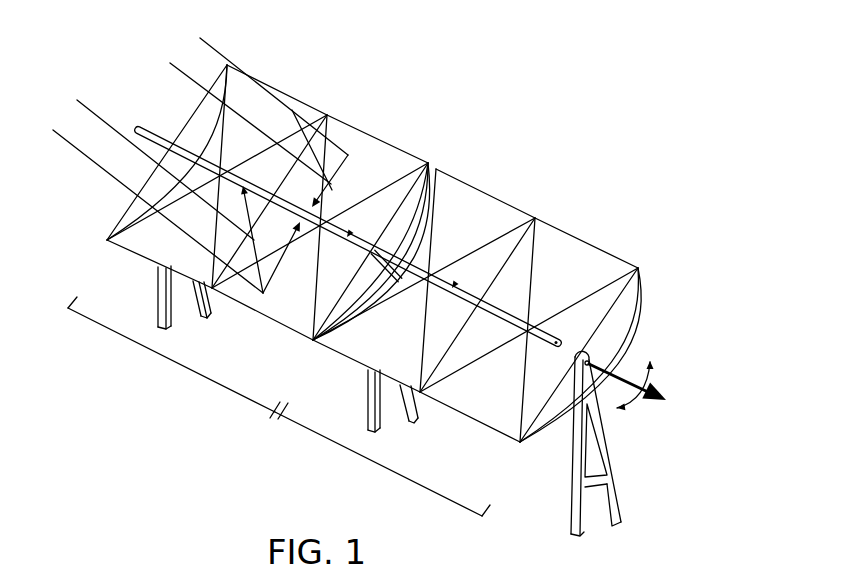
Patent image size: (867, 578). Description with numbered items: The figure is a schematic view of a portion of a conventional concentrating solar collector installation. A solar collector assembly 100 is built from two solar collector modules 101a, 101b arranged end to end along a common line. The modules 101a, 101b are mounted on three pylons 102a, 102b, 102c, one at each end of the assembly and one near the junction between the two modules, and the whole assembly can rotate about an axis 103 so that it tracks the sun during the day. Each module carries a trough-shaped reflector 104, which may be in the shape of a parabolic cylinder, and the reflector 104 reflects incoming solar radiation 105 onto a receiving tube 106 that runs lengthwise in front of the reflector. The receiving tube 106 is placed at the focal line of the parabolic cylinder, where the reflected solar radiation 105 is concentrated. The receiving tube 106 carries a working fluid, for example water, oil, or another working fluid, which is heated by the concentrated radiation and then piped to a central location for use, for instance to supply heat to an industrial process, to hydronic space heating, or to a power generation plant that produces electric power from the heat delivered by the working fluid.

The solar collector assembly 100 is at (537, 108).
The solar collector module 101a is at (345, 448).
The solar collector module 101b is at (156, 352).
The pylon 102a is at (570, 471).
The pylon 102b is at (368, 381).
The pylon 102c is at (159, 282).
The axis 103 is at (650, 404).
The trough-shaped reflector 104 is at (645, 292).
The incoming solar radiation 105 is at (148, 90).
The receiving tube 106 is at (513, 302).